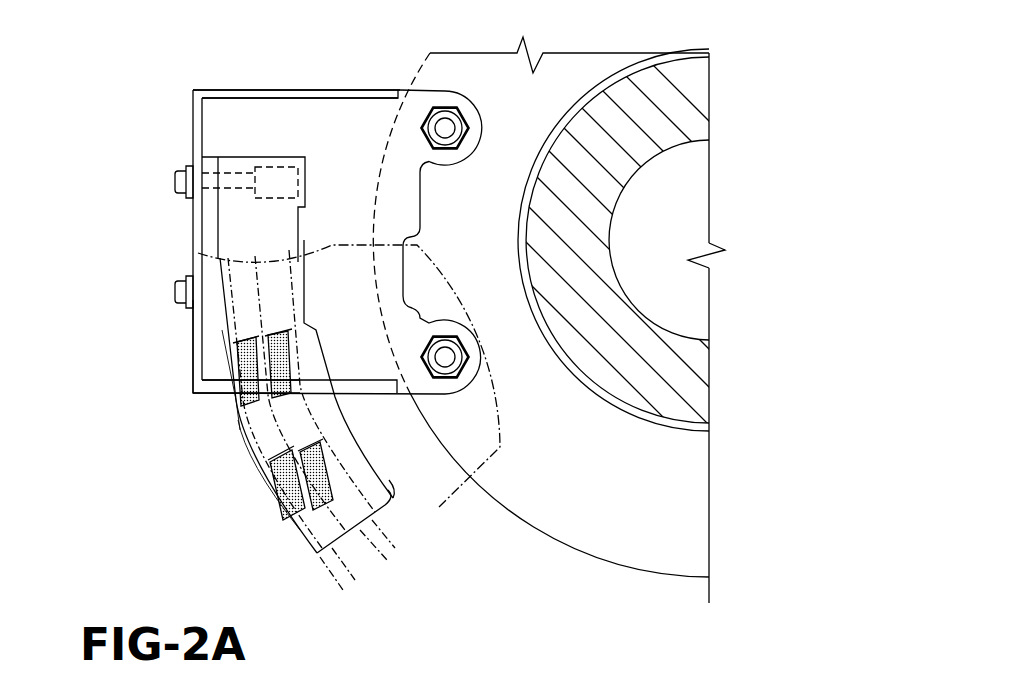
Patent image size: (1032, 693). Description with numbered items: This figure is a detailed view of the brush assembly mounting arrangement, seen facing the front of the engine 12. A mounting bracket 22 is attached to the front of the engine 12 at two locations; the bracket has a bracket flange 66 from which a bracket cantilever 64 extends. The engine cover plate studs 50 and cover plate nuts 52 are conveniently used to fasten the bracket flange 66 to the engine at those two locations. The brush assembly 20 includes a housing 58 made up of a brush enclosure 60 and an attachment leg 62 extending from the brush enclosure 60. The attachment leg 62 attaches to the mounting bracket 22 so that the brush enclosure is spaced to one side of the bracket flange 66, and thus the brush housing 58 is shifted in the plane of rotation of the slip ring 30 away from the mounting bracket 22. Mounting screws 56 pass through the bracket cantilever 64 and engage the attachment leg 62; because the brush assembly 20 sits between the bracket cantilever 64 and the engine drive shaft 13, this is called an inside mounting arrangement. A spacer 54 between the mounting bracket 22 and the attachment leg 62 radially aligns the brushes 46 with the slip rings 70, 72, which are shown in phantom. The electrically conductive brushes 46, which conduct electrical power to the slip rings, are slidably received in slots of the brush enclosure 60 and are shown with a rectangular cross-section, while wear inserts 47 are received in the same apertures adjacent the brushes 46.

The engine 12 is at (559, 49).
The engine drive shaft 13 is at (674, 56).
The brush assembly 20 is at (242, 461).
The mounting bracket 22 is at (190, 105).
The slip ring 30 is at (441, 506).
The brushes 46 is at (307, 505).
The wear inserts 47 is at (236, 341).
The engine cover plate studs 50 is at (445, 128).
The cover plate nuts 52 is at (479, 122).
The spacer 54 is at (212, 315).
The mounting screws 56 is at (190, 173).
The housing 58 is at (261, 497).
The brush enclosure 60 is at (238, 424).
The attachment leg 62 is at (305, 268).
The bracket cantilever 64 is at (194, 372).
The bracket flange 66 is at (267, 113).
The slip ring 70 is at (383, 545).
The slip ring 72 is at (358, 575).